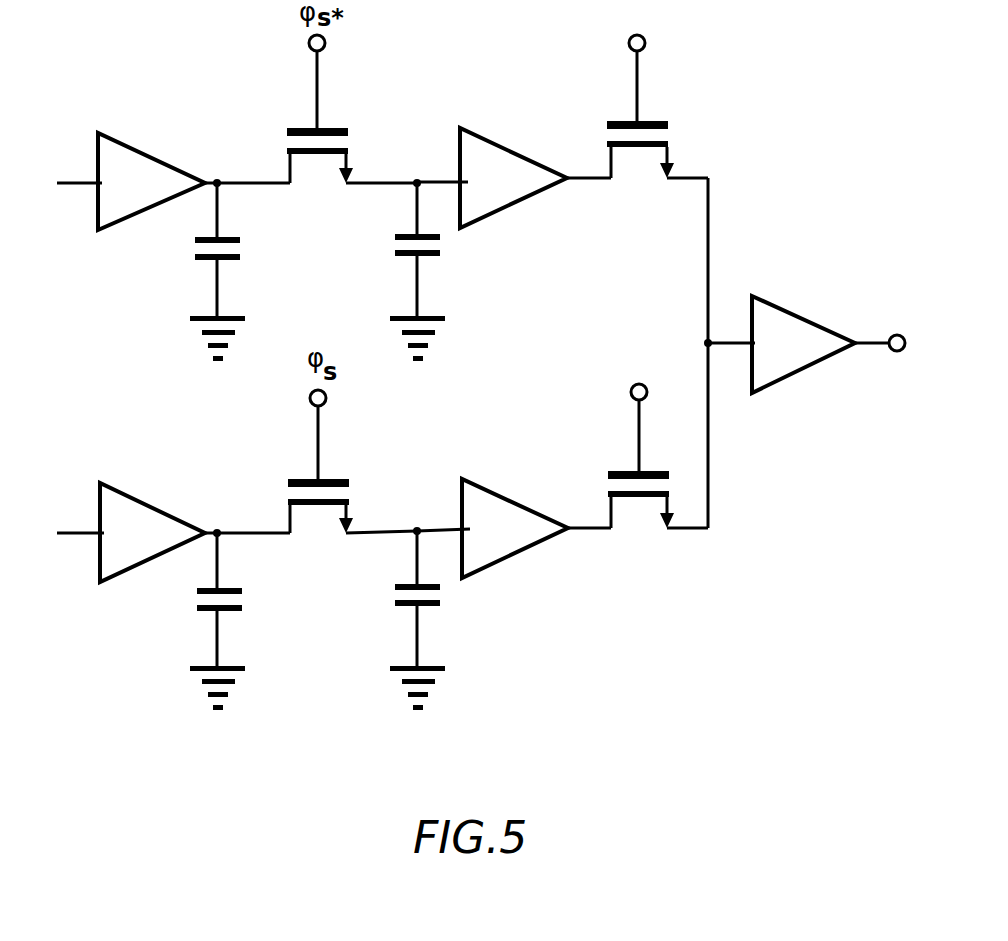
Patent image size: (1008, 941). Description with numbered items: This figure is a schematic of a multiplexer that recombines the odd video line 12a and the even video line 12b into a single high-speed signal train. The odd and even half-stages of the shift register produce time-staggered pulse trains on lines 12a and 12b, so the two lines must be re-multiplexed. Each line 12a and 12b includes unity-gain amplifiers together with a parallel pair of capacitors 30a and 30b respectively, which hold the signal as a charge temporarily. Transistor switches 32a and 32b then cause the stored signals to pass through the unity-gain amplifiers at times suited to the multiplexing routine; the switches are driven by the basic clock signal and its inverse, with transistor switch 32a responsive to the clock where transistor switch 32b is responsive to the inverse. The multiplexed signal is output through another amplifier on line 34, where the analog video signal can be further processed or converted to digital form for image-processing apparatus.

The odd video line 12a is at (73, 189).
The even video line 12b is at (83, 533).
The parallel pair of capacitors 30a is at (417, 303).
The parallel pair of capacitors 30b is at (417, 657).
The transistor switch 32a is at (633, 190).
The transistor switch 32b is at (647, 556).
The line 34 is at (878, 333).